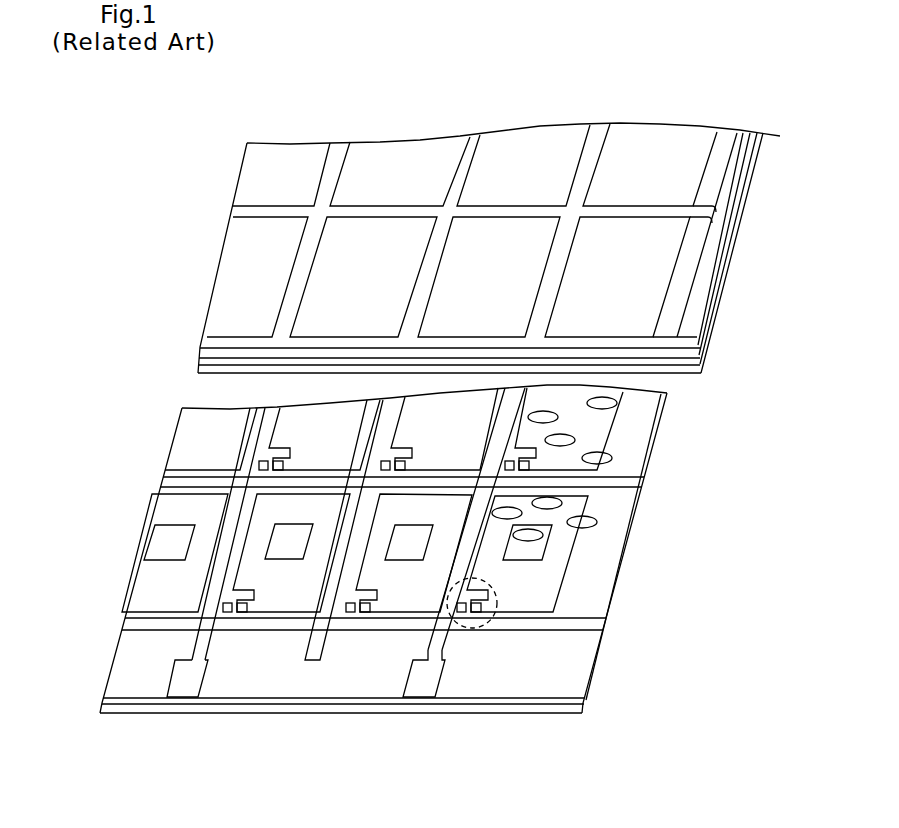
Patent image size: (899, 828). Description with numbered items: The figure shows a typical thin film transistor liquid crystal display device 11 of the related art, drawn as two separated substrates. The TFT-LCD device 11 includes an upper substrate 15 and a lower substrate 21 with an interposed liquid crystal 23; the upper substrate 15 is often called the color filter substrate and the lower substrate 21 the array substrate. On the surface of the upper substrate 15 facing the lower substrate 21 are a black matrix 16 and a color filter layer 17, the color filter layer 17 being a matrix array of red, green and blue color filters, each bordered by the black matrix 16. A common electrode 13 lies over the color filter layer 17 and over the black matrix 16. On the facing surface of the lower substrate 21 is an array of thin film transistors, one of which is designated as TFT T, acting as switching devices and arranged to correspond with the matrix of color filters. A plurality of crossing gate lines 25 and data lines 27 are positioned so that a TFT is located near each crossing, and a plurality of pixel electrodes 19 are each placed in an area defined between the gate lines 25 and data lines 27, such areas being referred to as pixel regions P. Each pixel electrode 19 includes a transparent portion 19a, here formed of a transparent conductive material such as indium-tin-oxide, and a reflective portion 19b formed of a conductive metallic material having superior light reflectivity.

The thin film transistor liquid crystal display device 11 is at (742, 582).
The common electrode 13 is at (700, 372).
The upper substrate 15 is at (690, 353).
The black matrix 16 is at (730, 212).
The color filter layer 17 is at (677, 260).
The pixel electrode 19 is at (572, 596).
The transparent portion 19a is at (538, 550).
The reflective portion 19b is at (557, 570).
The lower substrate 21 is at (556, 707).
The liquid crystal 23 is at (593, 453).
The gate line 25 is at (565, 627).
The data line 27 is at (428, 652).
The pixel region P is at (600, 553).
The thin film transistor T is at (490, 625).